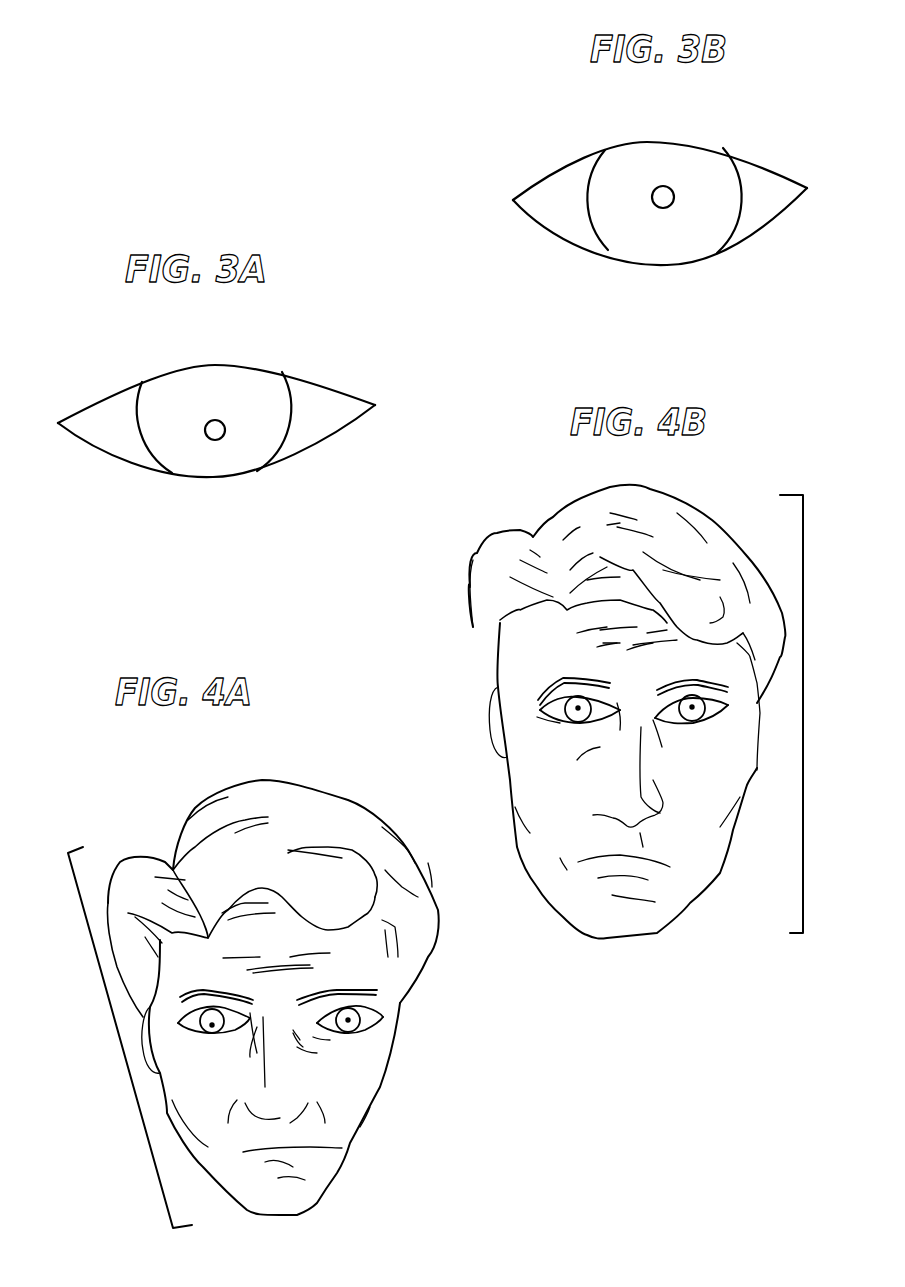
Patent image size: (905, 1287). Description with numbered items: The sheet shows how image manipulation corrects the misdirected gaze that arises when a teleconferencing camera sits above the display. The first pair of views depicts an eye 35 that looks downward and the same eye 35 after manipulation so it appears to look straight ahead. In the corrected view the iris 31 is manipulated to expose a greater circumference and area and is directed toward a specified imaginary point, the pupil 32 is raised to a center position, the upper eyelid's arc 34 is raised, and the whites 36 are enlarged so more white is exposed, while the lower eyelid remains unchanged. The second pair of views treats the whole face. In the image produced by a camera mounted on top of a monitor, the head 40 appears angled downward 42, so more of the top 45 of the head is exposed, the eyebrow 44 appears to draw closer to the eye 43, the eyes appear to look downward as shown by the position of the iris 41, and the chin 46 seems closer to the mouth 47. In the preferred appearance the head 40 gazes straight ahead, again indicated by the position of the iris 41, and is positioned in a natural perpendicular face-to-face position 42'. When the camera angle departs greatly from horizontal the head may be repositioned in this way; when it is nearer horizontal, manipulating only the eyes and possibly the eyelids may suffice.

In FIG. 3A, the iris 31 is at (180, 387).
In FIG. 3B, the iris 31 is at (700, 158).
In FIG. 3A, the pupil 32 is at (218, 418).
In FIG. 3B, the pupil 32 is at (663, 186).
In FIG. 3A, the upper eyelid arc 34 is at (306, 380).
In FIG. 3B, the upper eyelid arc 34 is at (587, 153).
In FIG. 3A, the eye 35 is at (93, 447).
In FIG. 3B, the eye 35 is at (768, 223).
In FIG. 3A, the whites 36 is at (322, 422).
In FIG. 3B, the whites 36 is at (565, 208).
In FIG. 4A, the head 40 is at (263, 779).
In FIG. 4B, the head 40 is at (570, 502).
In FIG. 4A, the iris 41 is at (360, 1030).
In FIG. 4B, the iris 41 is at (543, 717).
In FIG. 4A, the downward angle 42 is at (130, 1037).
In FIG. 4B, the perpendicular face-to-face position 42' is at (820, 714).
In FIG. 4A, the eye 43 is at (363, 1007).
In FIG. 4A, the eyebrow 44 is at (373, 990).
In FIG. 4A, the top of the head 45 is at (383, 877).
In FIG. 4B, the top of the head 45 is at (503, 547).
In FIG. 4A, the chin 46 is at (303, 1195).
In FIG. 4B, the chin 46 is at (583, 902).
In FIG. 4A, the mouth 47 is at (310, 1152).